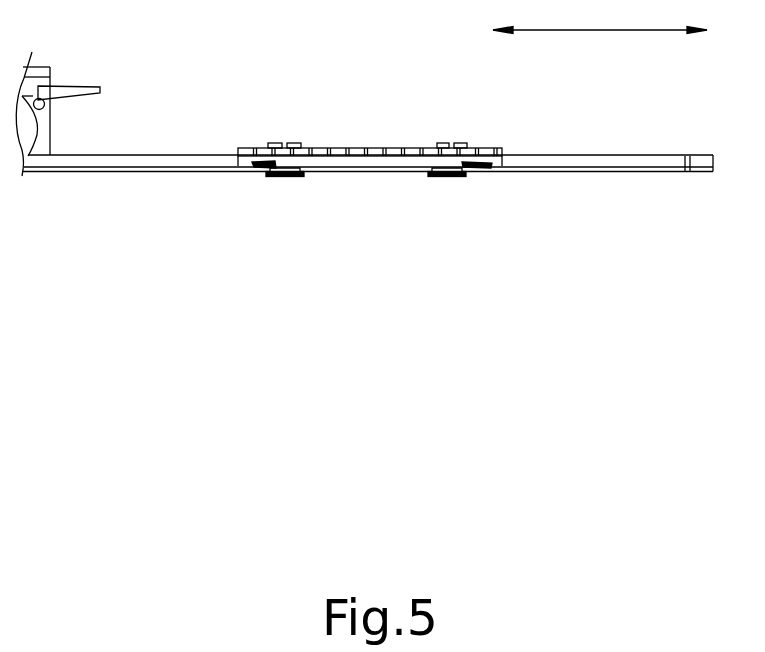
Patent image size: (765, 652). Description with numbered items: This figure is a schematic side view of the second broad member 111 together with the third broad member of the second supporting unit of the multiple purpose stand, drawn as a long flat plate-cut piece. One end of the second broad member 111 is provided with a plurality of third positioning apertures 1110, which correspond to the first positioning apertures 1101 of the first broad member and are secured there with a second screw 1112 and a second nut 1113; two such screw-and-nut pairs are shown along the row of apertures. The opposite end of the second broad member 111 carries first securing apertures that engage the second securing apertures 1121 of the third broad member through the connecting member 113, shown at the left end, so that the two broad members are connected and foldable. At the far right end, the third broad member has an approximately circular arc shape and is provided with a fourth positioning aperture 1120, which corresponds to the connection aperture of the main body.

The second broad member 111 is at (501, 142).
The connecting member 113 is at (67, 174).
The third positioning aperture 1110 is at (316, 147).
The second screw 1112 is at (273, 142).
The second nut 1113 is at (293, 176).
The first positioning aperture 1101 is at (247, 170).
The second securing aperture 1121 is at (487, 172).
The fourth positioning aperture 1120 is at (688, 174).